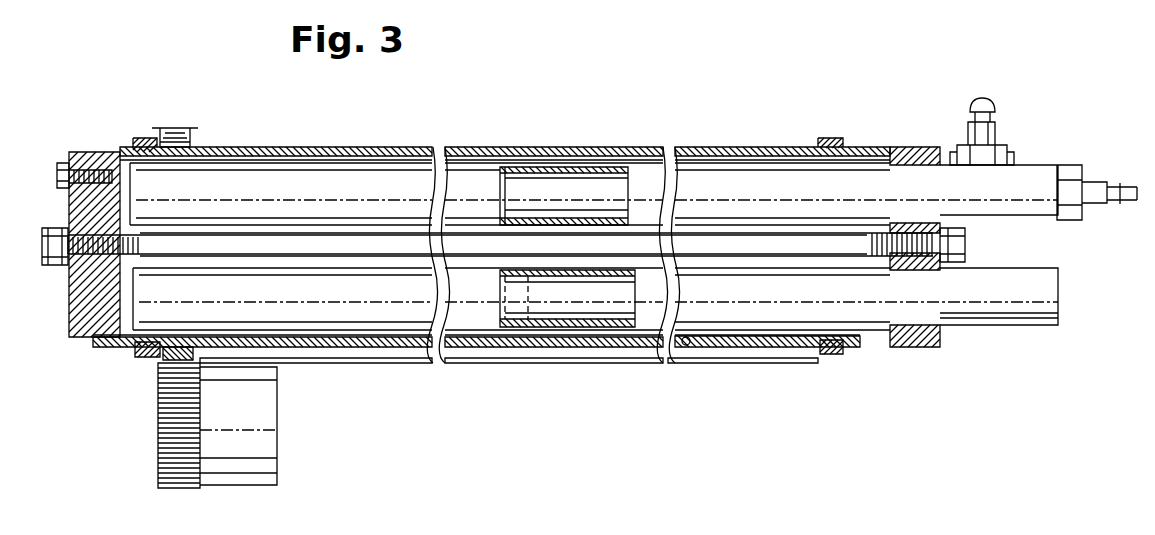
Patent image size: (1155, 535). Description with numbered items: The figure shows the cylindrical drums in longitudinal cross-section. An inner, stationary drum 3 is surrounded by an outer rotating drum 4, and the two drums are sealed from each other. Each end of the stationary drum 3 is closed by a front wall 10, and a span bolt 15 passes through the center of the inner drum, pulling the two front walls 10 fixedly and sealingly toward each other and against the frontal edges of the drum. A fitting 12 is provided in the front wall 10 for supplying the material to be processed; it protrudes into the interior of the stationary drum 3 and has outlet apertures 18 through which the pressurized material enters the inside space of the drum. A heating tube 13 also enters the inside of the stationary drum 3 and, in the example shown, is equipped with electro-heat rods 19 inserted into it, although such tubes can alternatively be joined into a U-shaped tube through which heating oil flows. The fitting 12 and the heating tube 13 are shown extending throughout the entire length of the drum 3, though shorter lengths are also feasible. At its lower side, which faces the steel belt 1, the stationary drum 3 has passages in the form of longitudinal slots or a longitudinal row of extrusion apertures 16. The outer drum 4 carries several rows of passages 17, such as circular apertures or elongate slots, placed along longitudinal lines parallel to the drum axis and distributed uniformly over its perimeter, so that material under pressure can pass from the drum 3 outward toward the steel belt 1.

The steel belt 1 is at (765, 363).
The stationary drum 3 is at (705, 148).
The outer rotating drum 4 is at (757, 148).
The front wall 10 is at (80, 340).
The fitting 12 is at (1038, 320).
The heating tube 13 is at (1032, 165).
The span bolt 15 is at (845, 245).
The extrusion apertures 16 is at (688, 346).
The passages 17 is at (645, 147).
The outlet apertures 18 is at (532, 280).
The electro-heat rods 19 is at (580, 192).